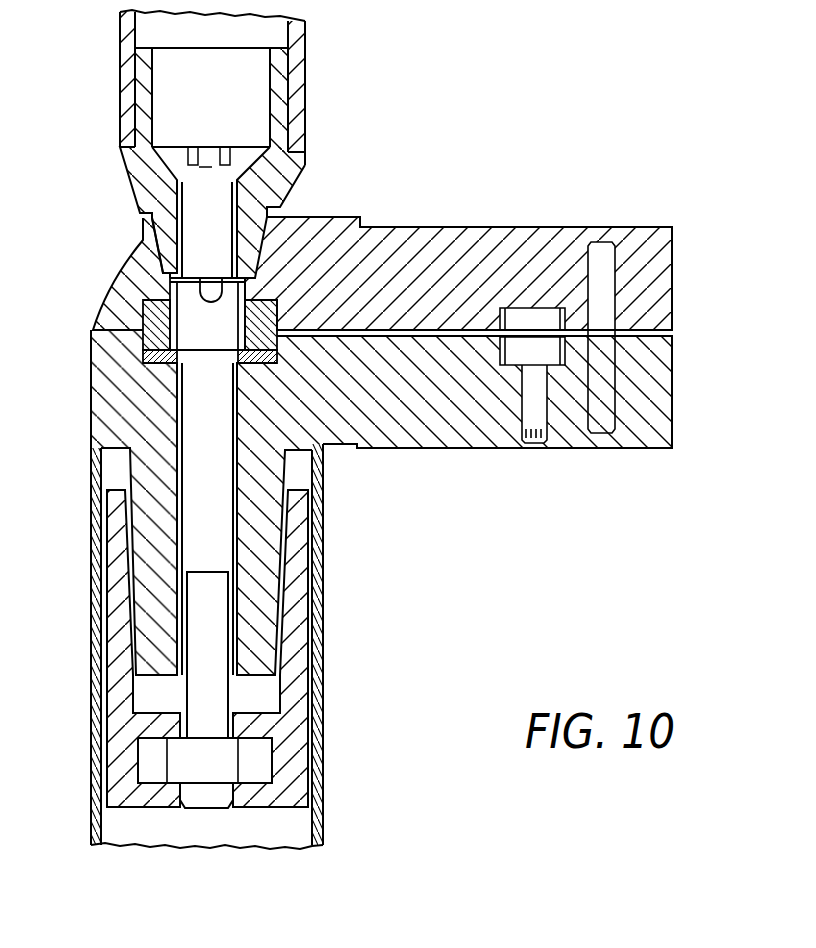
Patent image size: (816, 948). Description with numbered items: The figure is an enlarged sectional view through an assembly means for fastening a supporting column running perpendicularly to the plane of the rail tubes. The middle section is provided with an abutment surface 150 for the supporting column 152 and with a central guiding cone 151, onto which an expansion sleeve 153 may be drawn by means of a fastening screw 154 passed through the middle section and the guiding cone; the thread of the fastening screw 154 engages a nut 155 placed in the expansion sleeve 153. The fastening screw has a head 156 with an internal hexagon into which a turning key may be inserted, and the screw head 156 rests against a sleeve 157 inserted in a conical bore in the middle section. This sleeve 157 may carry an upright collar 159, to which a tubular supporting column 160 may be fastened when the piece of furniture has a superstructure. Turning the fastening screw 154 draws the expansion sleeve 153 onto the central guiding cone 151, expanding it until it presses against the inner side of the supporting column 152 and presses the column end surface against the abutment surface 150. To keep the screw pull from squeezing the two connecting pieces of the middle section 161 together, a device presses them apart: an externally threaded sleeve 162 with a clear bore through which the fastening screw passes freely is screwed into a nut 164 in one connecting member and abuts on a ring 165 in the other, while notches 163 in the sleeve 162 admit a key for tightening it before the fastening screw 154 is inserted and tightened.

The abutment surface 150 is at (313, 473).
The central guiding cone 151 is at (262, 537).
The supporting column 152 is at (325, 788).
The expansion sleeve 153 is at (295, 677).
The fastening screw 154 is at (197, 683).
The nut 155 is at (153, 758).
The screw head 156 is at (245, 157).
The sleeve 157 is at (147, 176).
The upright collar 159 is at (280, 88).
The tubular supporting column 160 is at (310, 40).
The arm 161 is at (472, 243).
The externally threaded sleeve 162 is at (183, 288).
The notches 163 is at (262, 292).
The nut 164 is at (153, 313).
The ring 165 is at (142, 351).